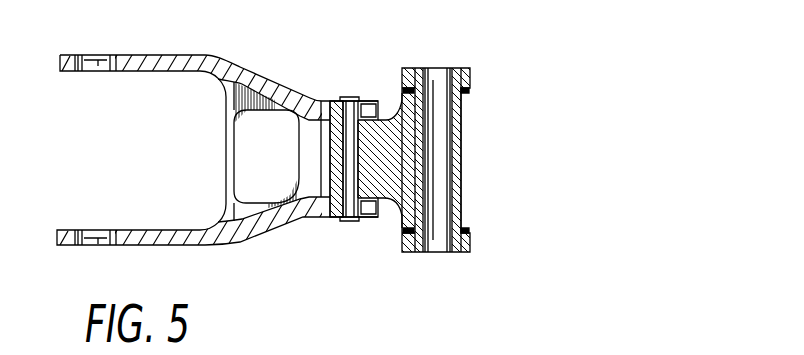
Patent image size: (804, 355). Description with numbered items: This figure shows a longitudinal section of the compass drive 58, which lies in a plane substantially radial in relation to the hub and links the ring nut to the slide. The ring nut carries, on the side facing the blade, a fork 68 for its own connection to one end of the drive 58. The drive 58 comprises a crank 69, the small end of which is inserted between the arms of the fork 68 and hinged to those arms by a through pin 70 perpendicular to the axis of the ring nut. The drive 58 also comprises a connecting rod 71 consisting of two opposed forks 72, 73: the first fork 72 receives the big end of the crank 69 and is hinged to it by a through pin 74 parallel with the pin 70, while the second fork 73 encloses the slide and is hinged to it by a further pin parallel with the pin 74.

The compass drive 58 is at (292, 150).
The fork 68 is at (467, 80).
The crank 69 is at (391, 117).
The through pin 70 is at (442, 182).
The connecting rod 71 is at (256, 60).
The fork 72 is at (333, 117).
The fork 73 is at (140, 62).
The through pin 74 is at (347, 221).